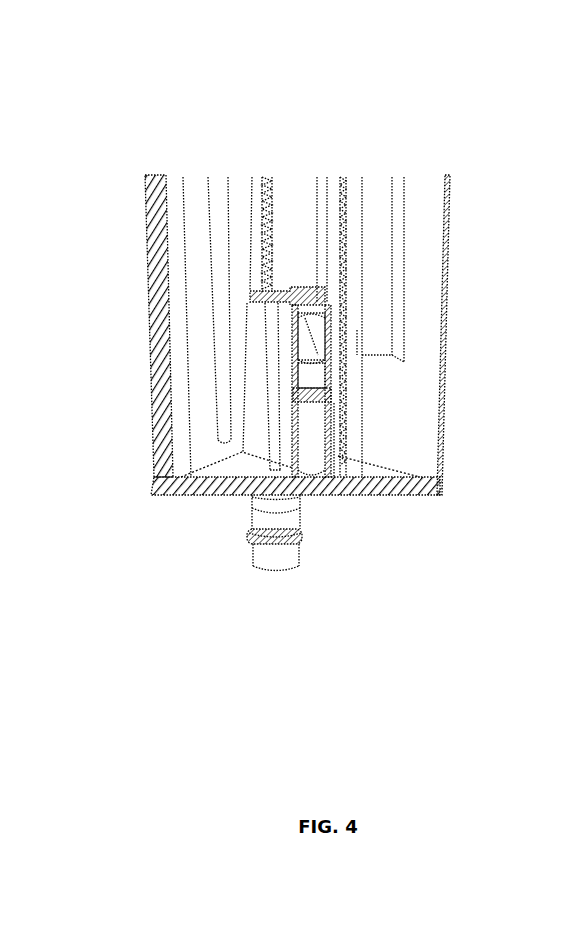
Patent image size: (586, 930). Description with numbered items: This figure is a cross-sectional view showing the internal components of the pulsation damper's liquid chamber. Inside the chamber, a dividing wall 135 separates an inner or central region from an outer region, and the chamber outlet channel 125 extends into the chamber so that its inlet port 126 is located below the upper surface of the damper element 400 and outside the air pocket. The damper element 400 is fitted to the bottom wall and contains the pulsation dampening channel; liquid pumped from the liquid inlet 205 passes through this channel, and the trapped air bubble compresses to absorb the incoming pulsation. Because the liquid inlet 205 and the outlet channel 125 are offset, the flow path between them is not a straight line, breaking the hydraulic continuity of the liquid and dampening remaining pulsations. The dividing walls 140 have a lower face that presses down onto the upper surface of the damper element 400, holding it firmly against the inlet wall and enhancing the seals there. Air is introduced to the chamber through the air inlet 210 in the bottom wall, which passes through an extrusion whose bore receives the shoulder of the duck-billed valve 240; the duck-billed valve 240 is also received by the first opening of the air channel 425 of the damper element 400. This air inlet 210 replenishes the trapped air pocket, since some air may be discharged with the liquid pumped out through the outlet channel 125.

The chamber outlet channel 125 is at (409, 297).
The inlet port of the chamber outlet channel 126 is at (397, 363).
The dividing wall 135 is at (184, 269).
The dividing walls 140 is at (310, 199).
The liquid inlet 205 is at (272, 587).
The air inlet 210 is at (326, 499).
The duck-billed valve 240 is at (328, 373).
The damper element 400 is at (238, 426).
The air channel 425 is at (338, 392).